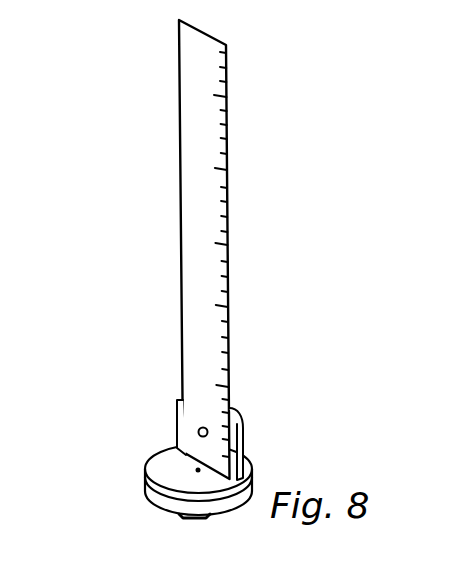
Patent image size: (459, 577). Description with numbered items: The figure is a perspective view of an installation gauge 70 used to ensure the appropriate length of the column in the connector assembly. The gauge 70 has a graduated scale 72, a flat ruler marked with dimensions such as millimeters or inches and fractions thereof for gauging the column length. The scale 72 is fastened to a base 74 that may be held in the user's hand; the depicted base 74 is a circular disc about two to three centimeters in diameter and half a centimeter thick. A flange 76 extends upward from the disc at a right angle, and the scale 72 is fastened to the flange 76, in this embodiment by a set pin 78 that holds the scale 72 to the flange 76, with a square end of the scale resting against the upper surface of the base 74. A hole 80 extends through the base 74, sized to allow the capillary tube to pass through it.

The installation gauge 70 is at (112, 257).
The graduated scale 72 is at (193, 314).
The base 74 is at (150, 497).
The flange 76 is at (243, 434).
The set pin 78 is at (198, 432).
The hole 80 is at (192, 468).